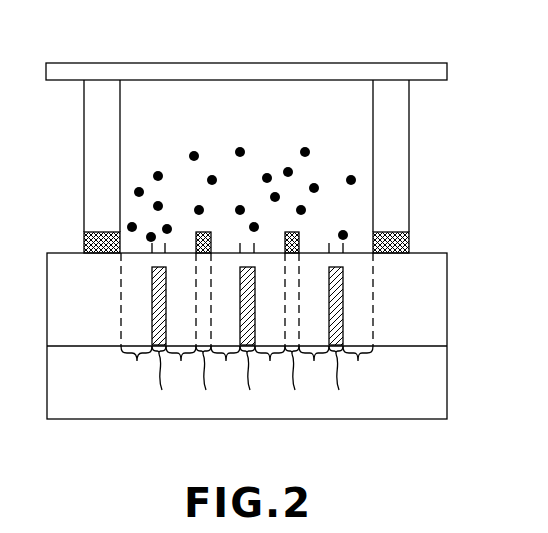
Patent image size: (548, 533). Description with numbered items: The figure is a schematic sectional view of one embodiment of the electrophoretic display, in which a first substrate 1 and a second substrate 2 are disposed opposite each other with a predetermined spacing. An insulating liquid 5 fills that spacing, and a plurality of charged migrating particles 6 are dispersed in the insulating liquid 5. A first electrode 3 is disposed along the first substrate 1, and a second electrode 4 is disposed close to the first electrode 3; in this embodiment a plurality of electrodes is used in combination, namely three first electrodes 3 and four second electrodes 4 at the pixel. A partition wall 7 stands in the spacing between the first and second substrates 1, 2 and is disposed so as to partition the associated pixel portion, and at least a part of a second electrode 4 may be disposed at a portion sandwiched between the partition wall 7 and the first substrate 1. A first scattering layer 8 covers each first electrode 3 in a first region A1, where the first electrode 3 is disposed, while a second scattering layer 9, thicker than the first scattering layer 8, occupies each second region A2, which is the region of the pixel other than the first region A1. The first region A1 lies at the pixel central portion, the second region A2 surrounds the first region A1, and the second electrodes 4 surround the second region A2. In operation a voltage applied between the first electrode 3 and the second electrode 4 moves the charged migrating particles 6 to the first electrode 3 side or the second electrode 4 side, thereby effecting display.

The first substrate 1 is at (440, 386).
The second substrate 2 is at (447, 71).
The first electrode 3 is at (242, 287).
The second electrode 4 is at (85, 242).
The insulating liquid 5 is at (339, 97).
The charged migrating particles 6 is at (159, 175).
The partition wall 7 is at (90, 153).
The first scattering layer 8 is at (157, 262).
The second scattering layer 9 is at (437, 292).
The first region A1 is at (250, 380).
The second region A2 is at (249, 369).